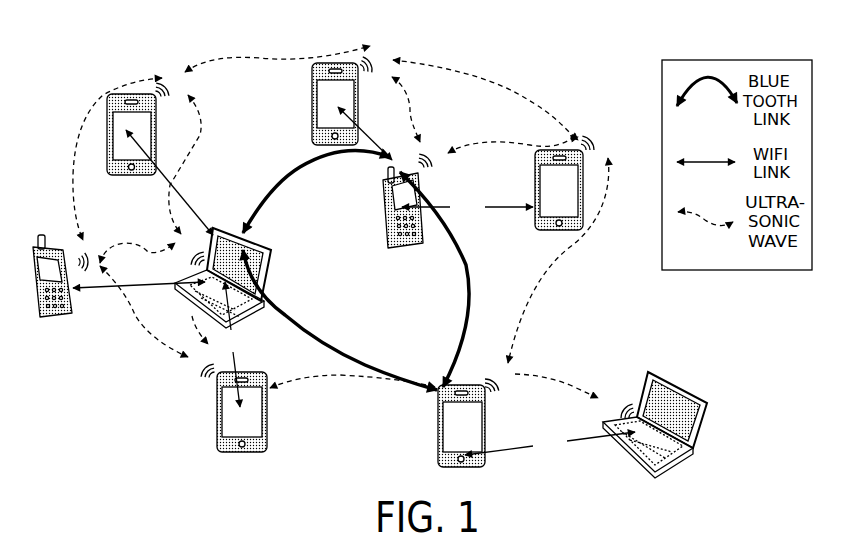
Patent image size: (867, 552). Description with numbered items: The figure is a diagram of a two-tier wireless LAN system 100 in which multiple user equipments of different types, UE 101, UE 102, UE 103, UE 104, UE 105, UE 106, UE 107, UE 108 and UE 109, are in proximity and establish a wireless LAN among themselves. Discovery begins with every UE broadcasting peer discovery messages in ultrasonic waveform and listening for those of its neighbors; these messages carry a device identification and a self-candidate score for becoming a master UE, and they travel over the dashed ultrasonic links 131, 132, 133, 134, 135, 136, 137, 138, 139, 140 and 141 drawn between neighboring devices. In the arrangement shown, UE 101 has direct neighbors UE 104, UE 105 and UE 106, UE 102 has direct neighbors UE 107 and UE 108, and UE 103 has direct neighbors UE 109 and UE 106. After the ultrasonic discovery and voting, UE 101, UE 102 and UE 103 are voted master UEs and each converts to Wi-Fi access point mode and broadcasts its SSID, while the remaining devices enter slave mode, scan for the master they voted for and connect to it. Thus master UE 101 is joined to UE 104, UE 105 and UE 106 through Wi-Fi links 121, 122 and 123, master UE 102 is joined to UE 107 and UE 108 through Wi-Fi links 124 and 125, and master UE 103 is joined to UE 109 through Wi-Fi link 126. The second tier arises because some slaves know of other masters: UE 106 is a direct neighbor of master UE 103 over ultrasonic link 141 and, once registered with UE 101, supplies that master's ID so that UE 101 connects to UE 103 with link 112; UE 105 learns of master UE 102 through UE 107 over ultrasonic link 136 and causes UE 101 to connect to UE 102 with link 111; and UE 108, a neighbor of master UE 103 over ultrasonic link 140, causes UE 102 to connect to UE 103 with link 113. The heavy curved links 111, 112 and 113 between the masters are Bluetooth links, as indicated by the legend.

The two-tier wireless LAN system 100 is at (586, 72).
The master UE 101 is at (266, 249).
The master UE 102 is at (384, 212).
The master UE 103 is at (438, 430).
The UE 104 is at (41, 236).
The UE 105 is at (107, 94).
The UE 106 is at (217, 420).
The UE 107 is at (312, 63).
The UE 108 is at (536, 190).
The UE 109 is at (662, 375).
The link 111 is at (316, 191).
The link 112 is at (340, 320).
The link 113 is at (436, 279).
The Wi-Fi link 121 is at (100, 290).
The Wi-Fi link 122 is at (202, 222).
The Wi-Fi link 123 is at (233, 344).
The Wi-Fi link 124 is at (341, 122).
The Wi-Fi link 125 is at (467, 208).
The Wi-Fi link 126 is at (550, 443).
The ultrasonic link 131 is at (72, 182).
The ultrasonic link 132 is at (135, 325).
The ultrasonic link 133 is at (130, 242).
The ultrasonic link 134 is at (192, 318).
The ultrasonic link 135 is at (200, 136).
The ultrasonic link 136 is at (233, 60).
The ultrasonic link 137 is at (417, 62).
The ultrasonic link 138 is at (410, 101).
The ultrasonic link 139 is at (500, 138).
The ultrasonic link 140 is at (530, 292).
The ultrasonic link 141 is at (300, 380).